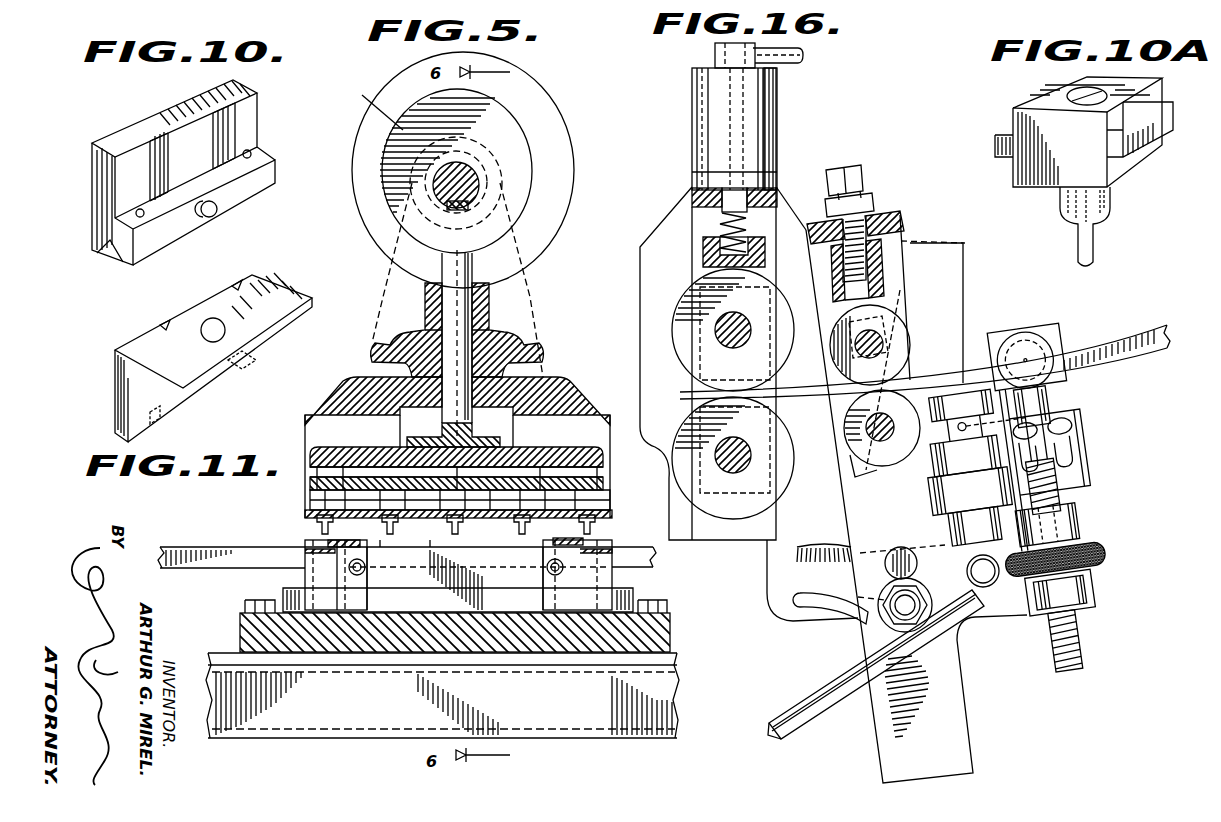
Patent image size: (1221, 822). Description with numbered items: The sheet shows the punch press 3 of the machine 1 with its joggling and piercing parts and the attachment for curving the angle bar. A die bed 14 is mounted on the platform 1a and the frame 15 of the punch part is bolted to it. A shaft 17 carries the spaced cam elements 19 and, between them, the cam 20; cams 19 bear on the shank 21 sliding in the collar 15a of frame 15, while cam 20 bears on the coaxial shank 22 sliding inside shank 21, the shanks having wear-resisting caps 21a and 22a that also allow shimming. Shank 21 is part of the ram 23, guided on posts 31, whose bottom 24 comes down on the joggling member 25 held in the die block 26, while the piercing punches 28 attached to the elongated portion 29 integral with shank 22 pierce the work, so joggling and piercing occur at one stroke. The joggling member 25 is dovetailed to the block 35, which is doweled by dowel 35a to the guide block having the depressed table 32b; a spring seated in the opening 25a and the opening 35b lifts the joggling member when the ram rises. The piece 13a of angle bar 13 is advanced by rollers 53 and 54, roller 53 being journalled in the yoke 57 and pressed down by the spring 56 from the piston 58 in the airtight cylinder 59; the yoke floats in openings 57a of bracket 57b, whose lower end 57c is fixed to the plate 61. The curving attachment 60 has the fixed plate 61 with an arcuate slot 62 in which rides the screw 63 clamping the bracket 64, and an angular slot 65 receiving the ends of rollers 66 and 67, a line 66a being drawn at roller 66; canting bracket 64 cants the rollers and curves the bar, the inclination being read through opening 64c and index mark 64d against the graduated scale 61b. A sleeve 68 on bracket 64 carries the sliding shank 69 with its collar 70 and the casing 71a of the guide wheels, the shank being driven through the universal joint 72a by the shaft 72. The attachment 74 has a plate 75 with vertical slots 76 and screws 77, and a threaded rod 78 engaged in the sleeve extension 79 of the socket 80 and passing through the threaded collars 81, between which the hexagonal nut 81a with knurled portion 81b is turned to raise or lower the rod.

In FIG. 5, the machine bed 1 is at (672, 700).
In FIG. 5, the platform 1a is at (209, 653).
In FIG. 5, the press 3 is at (556, 359).
In FIG. 5, the angle bar 13 is at (218, 547).
In FIG. 16, the piece 13a is at (797, 392).
In FIG. 5, the die bed 14 is at (672, 630).
In FIG. 5, the frame 15 is at (500, 297).
In FIG. 5, the collar 15a is at (372, 352).
In FIG. 5, the shaft 17 is at (463, 165).
In FIG. 5, the cams 19 is at (565, 160).
In FIG. 5, the cam 20 is at (517, 193).
In FIG. 5, the shank 21 is at (490, 284).
In FIG. 5, the cap 21a is at (426, 294).
In FIG. 5, the shank 22 is at (478, 268).
In FIG. 5, the cap 22a is at (441, 263).
In FIG. 5, the ram 23 is at (577, 408).
In FIG. 5, the bottom 24 is at (612, 513).
In FIG. 11, the joggling member 25 is at (140, 343).
In FIG. 5, the joggling member 25 is at (308, 540).
In FIG. 11, the opening 25a is at (242, 369).
In FIG. 5, the die block 26 is at (418, 550).
In FIG. 10A, the piercing punches 28 is at (1032, 162).
In FIG. 5, the piercing punches 28 is at (487, 540).
In FIG. 5, the elongated portion 29 is at (603, 453).
In FIG. 5, the posts 31 is at (357, 559).
In FIG. 5, the depressed table 32b is at (305, 553).
In FIG. 10, the block 35 is at (135, 123).
In FIG. 10, the dowel 35a is at (211, 212).
In FIG. 10, the opening 35b is at (250, 154).
In FIG. 16, the roller 53 is at (690, 297).
In FIG. 16, the roller 54 is at (733, 458).
In FIG. 16, the spring 56 is at (745, 200).
In FIG. 16, the yoke 57 is at (703, 261).
In FIG. 16, the openings 57a is at (703, 246).
In FIG. 16, the bracket 57b is at (767, 267).
In FIG. 16, the lower end 57c is at (717, 543).
In FIG. 16, the piston 58 is at (692, 193).
In FIG. 16, the cylinder 59 is at (777, 120).
In FIG. 16, the attachment 60 is at (777, 633).
In FIG. 16, the fixed plate 61 is at (655, 313).
In FIG. 16, the graduated scale 61b is at (824, 548).
In FIG. 16, the arcuate slot 62 is at (822, 608).
In FIG. 16, the screw 63 is at (879, 592).
In FIG. 16, the bracket 64 is at (897, 240).
In FIG. 16, the opening 64c is at (918, 564).
In FIG. 16, the index mark 64d is at (904, 538).
In FIG. 16, the angular slot 65 is at (910, 336).
In FIG. 16, the roller 66 is at (900, 330).
In FIG. 16, the screw axis 66a is at (903, 305).
In FIG. 16, the roller 67 is at (873, 468).
In FIG. 16, the sleeve 68 is at (935, 478).
In FIG. 16, the shank 69 is at (958, 533).
In FIG. 16, the collar 70 is at (920, 452).
In FIG. 16, the casing 71a is at (945, 385).
In FIG. 16, the shaft 72 is at (820, 692).
In FIG. 16, the universal joint 72a is at (985, 583).
In FIG. 16, the attachment 74 is at (1090, 521).
In FIG. 16, the plate 75 is at (1050, 330).
In FIG. 16, the vertical slots 76 is at (1060, 448).
In FIG. 16, the screws 77 is at (1060, 422).
In FIG. 16, the threaded rod 78 is at (1057, 493).
In FIG. 16, the sleeve extension 79 is at (1057, 397).
In FIG. 16, the socket 80 is at (1040, 358).
In FIG. 16, the collars 81 is at (1082, 532).
In FIG. 16, the hexagonal nut 81a is at (1055, 544).
In FIG. 16, the knurled portion 81b is at (1027, 615).